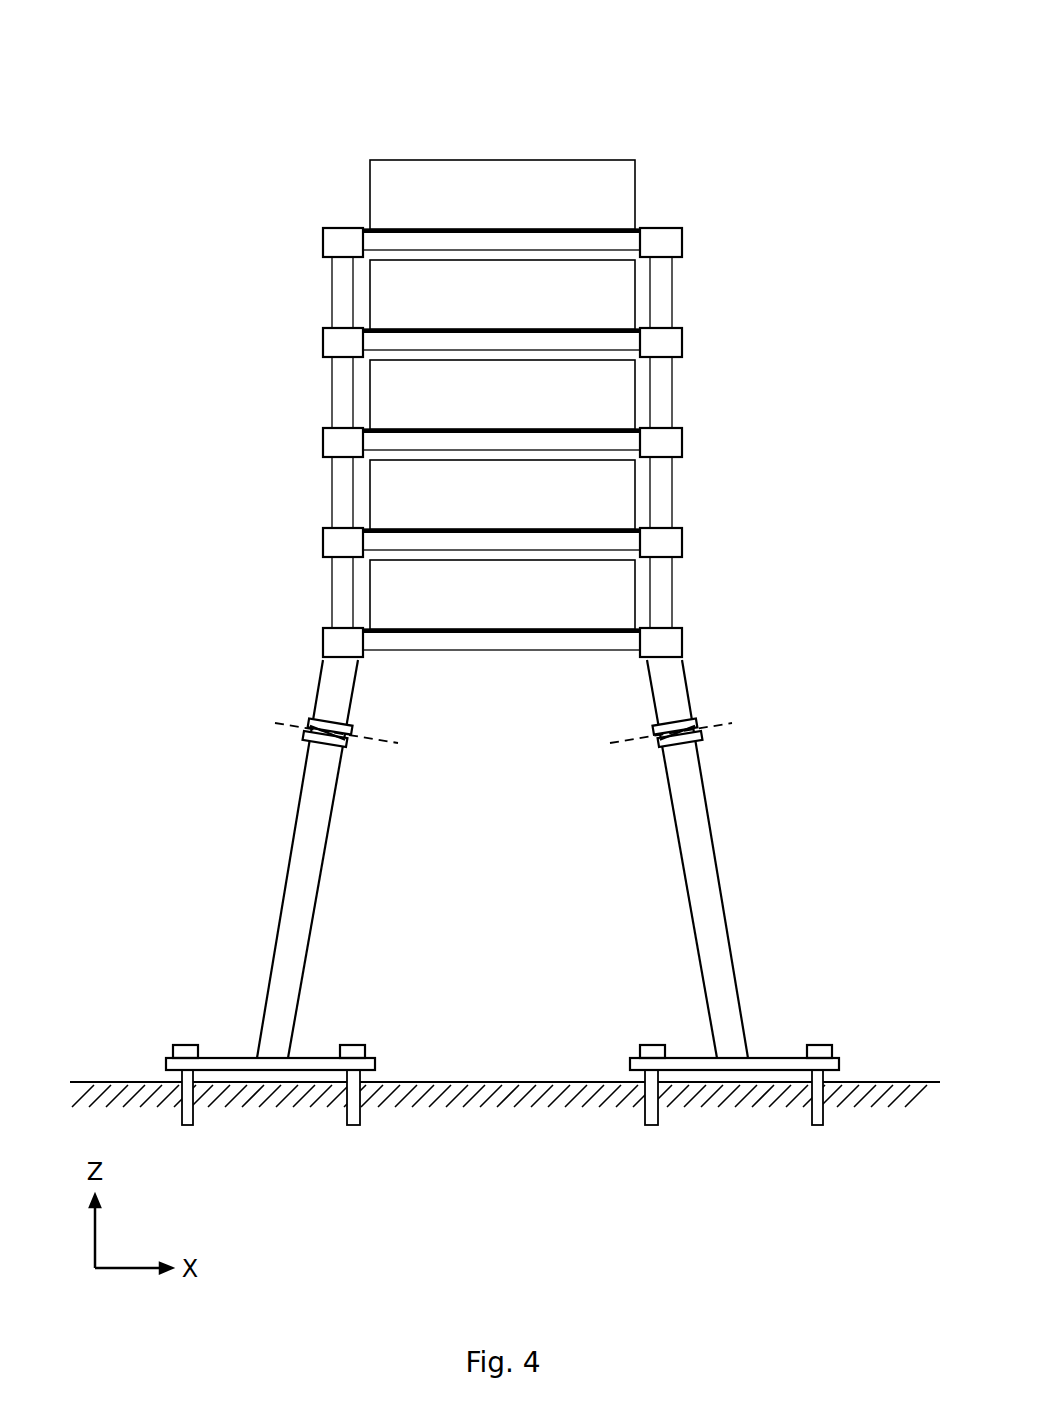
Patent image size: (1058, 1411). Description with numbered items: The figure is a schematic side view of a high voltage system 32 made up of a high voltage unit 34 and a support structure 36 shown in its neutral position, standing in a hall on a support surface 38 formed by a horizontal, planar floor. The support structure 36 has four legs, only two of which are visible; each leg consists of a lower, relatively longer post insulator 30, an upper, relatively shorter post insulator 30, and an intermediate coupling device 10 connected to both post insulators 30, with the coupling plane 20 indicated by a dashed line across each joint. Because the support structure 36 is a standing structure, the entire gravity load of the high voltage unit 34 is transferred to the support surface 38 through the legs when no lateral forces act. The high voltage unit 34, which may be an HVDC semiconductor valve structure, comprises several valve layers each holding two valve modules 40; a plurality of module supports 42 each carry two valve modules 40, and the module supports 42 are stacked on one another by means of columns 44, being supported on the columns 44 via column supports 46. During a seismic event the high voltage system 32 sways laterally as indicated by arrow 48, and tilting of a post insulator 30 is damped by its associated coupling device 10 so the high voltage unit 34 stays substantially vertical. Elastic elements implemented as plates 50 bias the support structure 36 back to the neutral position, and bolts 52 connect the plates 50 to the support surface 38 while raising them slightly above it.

The coupling device 10 is at (312, 725).
The coupling plane 20 is at (373, 740).
The post insulator 30 is at (335, 682).
The high voltage system 32 is at (208, 80).
The high voltage unit 34 is at (183, 328).
The support structure 36 is at (156, 763).
The support surface 38 is at (112, 1080).
The valve module 40 is at (489, 212).
The module support 42 is at (585, 243).
The column 44 is at (345, 292).
The column support 46 is at (343, 243).
The arrow 48 is at (440, 68).
The plate 50 is at (222, 1063).
The bolt 52 is at (185, 1050).